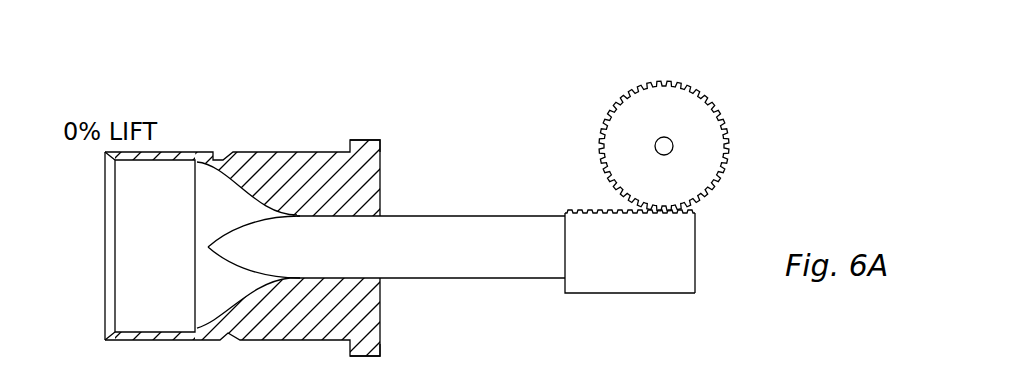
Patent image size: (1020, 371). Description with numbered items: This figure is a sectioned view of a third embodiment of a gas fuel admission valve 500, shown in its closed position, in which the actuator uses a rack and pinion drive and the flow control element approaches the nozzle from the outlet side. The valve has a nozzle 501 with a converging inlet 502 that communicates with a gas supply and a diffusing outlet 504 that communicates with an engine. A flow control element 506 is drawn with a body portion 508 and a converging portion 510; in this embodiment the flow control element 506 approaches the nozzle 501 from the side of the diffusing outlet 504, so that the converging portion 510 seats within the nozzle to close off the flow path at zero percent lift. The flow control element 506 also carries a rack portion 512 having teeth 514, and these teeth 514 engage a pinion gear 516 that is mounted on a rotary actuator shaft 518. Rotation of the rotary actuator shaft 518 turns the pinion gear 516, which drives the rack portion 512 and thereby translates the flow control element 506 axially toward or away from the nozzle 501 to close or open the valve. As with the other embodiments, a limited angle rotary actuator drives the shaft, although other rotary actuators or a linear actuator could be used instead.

The gas fuel admission valve 500 is at (717, 73).
The nozzle 501 is at (366, 138).
The converging inlet 502 is at (236, 303).
The diffusing outlet 504 is at (375, 280).
The flow control element 506 is at (565, 308).
The body portion 508 is at (503, 265).
The converging portion 510 is at (235, 224).
The rack portion 512 is at (681, 283).
The teeth 514 is at (580, 185).
The pinion gear 516 is at (708, 168).
The rotary actuator shaft 518 is at (673, 143).